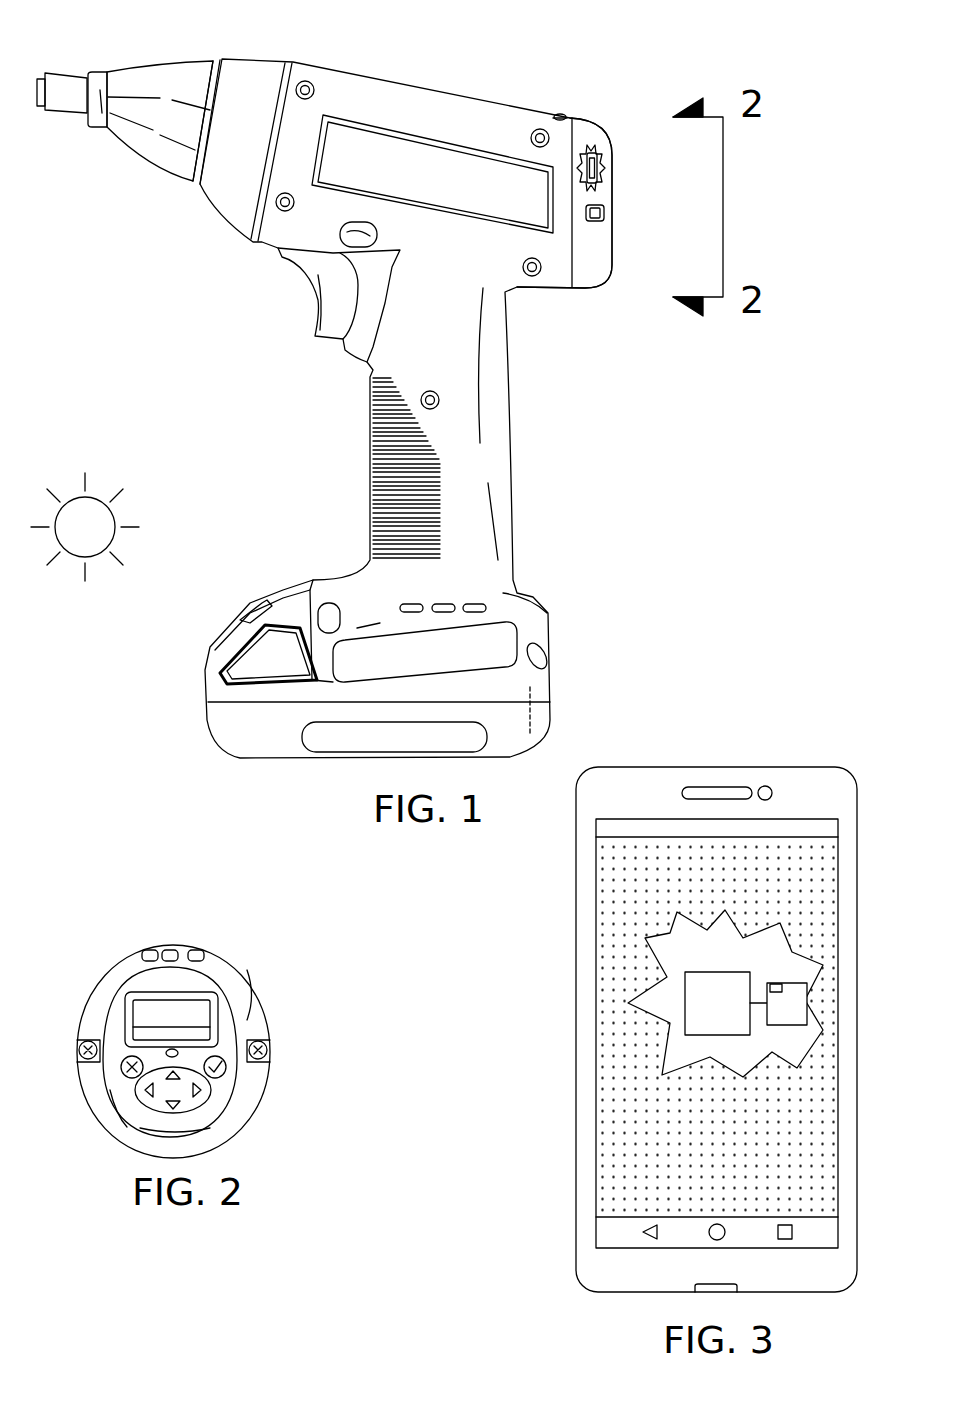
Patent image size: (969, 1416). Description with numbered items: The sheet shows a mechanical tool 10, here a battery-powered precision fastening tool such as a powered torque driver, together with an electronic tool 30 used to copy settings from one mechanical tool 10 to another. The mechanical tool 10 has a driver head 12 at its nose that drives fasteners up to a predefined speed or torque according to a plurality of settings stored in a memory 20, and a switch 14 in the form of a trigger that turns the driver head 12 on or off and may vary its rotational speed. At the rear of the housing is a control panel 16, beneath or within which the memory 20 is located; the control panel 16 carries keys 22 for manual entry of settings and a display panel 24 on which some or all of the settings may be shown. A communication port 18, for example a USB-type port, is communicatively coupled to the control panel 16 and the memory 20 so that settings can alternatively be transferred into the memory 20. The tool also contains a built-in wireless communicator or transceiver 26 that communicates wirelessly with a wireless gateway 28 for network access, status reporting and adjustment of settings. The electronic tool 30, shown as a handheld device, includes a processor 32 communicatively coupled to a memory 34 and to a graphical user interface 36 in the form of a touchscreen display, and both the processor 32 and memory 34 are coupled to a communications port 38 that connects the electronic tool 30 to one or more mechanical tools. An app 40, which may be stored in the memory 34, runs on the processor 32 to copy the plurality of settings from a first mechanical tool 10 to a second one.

In FIG. 1, the mechanical tool 10 is at (636, 68).
In FIG. 1, the driver head 12 is at (131, 62).
In FIG. 1, the switch 14 is at (318, 342).
In FIG. 1, the control panel 16 is at (620, 244).
In FIG. 2, the control panel 16 is at (262, 970).
In FIG. 1, the communication port 18 is at (561, 110).
In FIG. 1, the memory 20 is at (592, 146).
In FIG. 2, the keys 22 is at (244, 1138).
In FIG. 2, the display panel 24 is at (206, 991).
In FIG. 1, the wireless communicator or transceiver 26 is at (604, 177).
In FIG. 1, the wireless gateway 28 is at (72, 540).
In FIG. 3, the electronic tool 30 is at (815, 767).
In FIG. 3, the processor 32 is at (703, 1019).
In FIG. 3, the memory 34 is at (776, 1018).
In FIG. 3, the graphical user interface 36 is at (828, 878).
In FIG. 3, the communications port 38 is at (728, 1293).
In FIG. 3, the app 40 is at (776, 983).